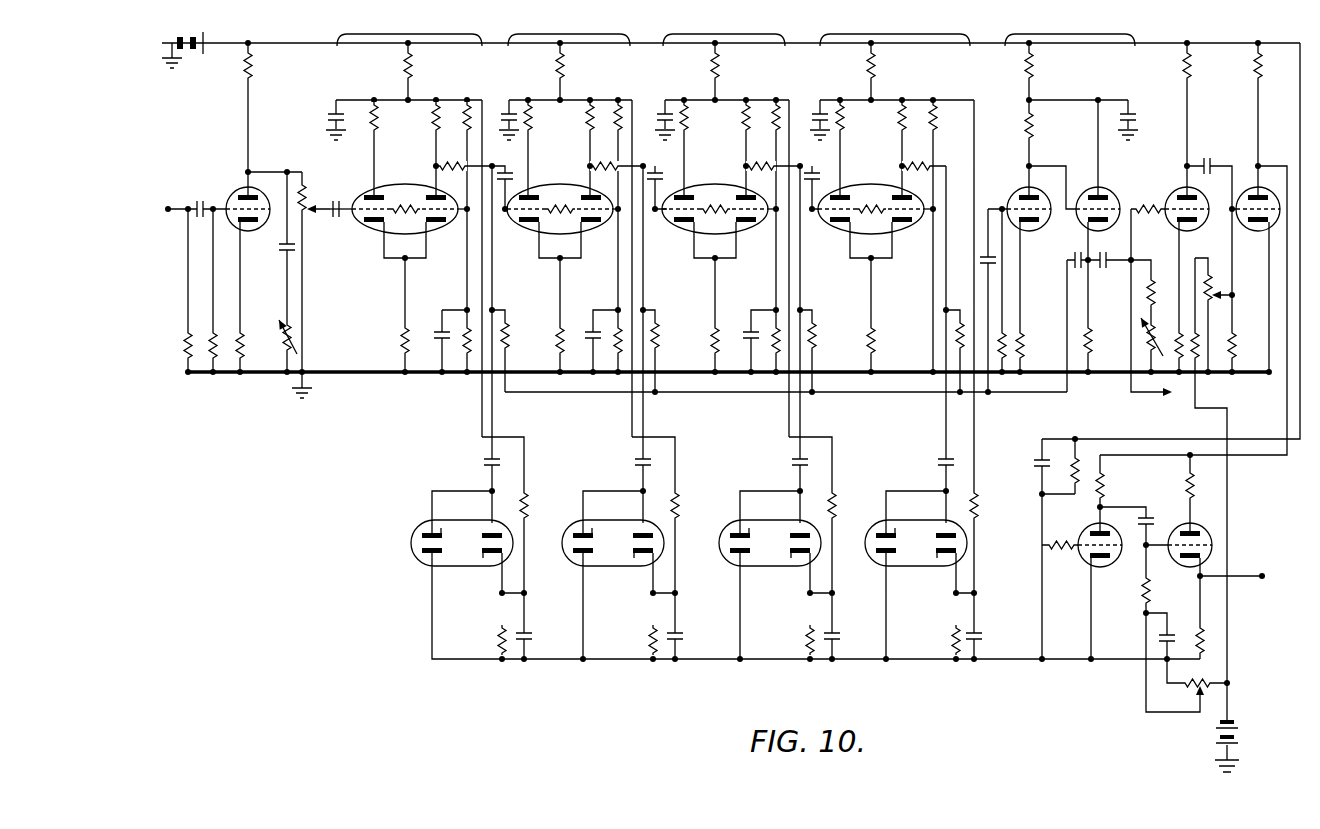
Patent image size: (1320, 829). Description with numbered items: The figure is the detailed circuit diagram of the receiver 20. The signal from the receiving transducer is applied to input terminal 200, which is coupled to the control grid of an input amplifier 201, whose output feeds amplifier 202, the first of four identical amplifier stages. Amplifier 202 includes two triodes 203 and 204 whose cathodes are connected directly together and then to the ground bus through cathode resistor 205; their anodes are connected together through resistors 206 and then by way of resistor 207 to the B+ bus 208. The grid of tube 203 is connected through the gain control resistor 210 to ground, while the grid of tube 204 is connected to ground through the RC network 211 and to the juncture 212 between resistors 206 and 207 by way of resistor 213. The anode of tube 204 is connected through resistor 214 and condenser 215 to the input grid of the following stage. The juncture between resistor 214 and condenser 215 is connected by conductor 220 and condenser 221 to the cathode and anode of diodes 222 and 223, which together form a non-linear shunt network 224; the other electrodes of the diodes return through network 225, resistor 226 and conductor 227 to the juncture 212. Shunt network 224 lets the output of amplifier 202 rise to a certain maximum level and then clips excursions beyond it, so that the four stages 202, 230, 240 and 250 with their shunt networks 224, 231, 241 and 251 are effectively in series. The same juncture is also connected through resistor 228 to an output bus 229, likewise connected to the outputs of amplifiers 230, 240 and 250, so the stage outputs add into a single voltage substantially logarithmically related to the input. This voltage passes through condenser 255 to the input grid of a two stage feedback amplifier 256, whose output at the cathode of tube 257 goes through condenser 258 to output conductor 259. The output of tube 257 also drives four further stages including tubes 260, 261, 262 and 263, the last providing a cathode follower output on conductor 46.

The receiver 20 is at (822, 33).
The conductor 46 is at (1250, 579).
The input terminal 200 is at (170, 203).
The input amplifier 201 is at (245, 197).
The amplifier 202 is at (409, 30).
The triode 203 is at (368, 196).
The triode 204 is at (441, 229).
The cathode resistor 205 is at (403, 345).
The resistors 206 is at (436, 122).
The resistor 207 is at (413, 66).
The B+ bus 208 is at (293, 46).
The gain control resistor 210 is at (311, 218).
The RC network 211 is at (454, 362).
The juncture 212 is at (410, 99).
The resistor 213 is at (465, 123).
The resistor 214 is at (440, 157).
The condenser 215 is at (507, 165).
The conductor 220 is at (498, 278).
The condenser 221 is at (478, 462).
The diode 222 is at (411, 548).
The diode 223 is at (478, 526).
The non-linear shunt network 224 is at (484, 614).
The network 225 is at (527, 618).
The resistor 226 is at (528, 500).
The conductor 227 is at (527, 479).
The resistor 228 is at (507, 337).
The output bus 229 is at (548, 393).
The amplifier 230 is at (583, 225).
The non-linear shunt network 231 is at (635, 614).
The amplifier 240 is at (738, 225).
The non-linear shunt network 241 is at (793, 614).
The amplifier 250 is at (892, 225).
The non-linear shunt network 251 is at (939, 614).
The condenser 255 is at (999, 262).
The two stage feedback amplifier 256 is at (1067, 194).
The tube 257 is at (1106, 197).
The condenser 258 is at (1109, 270).
The output conductor 259 is at (1150, 395).
The tube 260 is at (1168, 196).
The tube 261 is at (1257, 226).
The tube 262 is at (1088, 530).
The tube 263 is at (1194, 531).